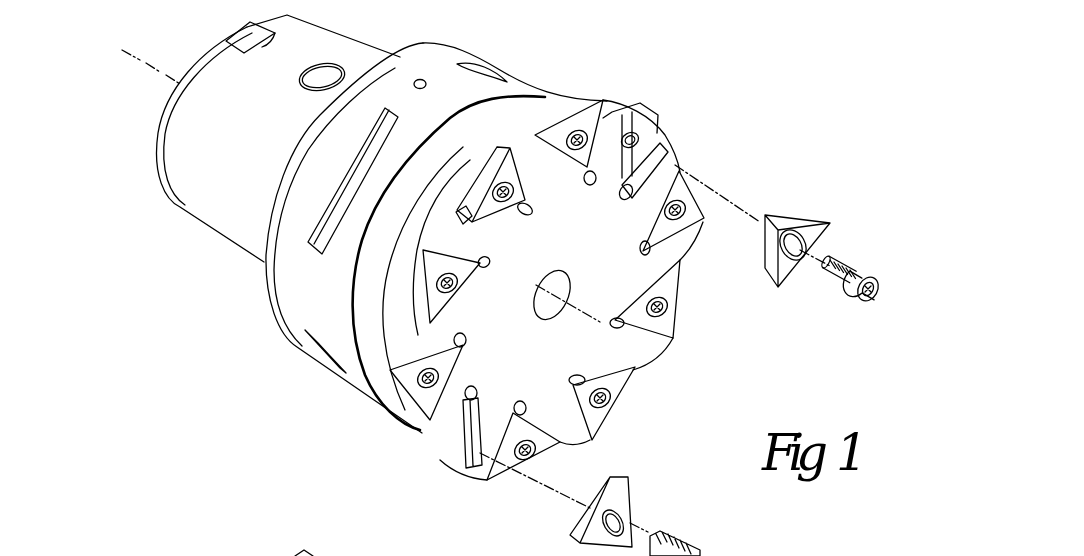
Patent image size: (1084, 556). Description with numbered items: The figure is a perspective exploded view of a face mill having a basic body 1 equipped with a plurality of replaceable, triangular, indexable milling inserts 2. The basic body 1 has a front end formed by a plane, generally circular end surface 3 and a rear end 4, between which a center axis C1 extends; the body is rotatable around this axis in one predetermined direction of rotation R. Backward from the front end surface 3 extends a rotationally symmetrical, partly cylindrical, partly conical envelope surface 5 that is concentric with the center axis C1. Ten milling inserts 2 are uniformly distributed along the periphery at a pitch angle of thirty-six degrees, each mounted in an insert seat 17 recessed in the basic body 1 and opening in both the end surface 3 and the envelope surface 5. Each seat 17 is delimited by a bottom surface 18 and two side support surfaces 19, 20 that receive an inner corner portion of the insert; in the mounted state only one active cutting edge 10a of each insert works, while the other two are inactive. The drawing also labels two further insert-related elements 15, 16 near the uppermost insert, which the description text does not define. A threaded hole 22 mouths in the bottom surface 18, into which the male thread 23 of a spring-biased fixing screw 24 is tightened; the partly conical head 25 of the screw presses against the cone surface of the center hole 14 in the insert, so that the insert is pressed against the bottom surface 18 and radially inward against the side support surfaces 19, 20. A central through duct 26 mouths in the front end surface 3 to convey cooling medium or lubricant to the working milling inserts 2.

The basic body 1 is at (408, 285).
The milling insert 2 is at (610, 302).
The front end surface 3 is at (553, 295).
The rear end 4 is at (152, 146).
The envelope surface 5 is at (394, 453).
The active cutting edge 10a is at (576, 130).
The center hole 14 is at (802, 262).
The insert seat side wall 15 is at (525, 99).
The cutting edge 16 is at (612, 63).
The insert seat 17 is at (444, 455).
The bottom surface 18 is at (648, 145).
The side support surface 19 is at (472, 442).
The side support surface 20 is at (642, 160).
The threaded hole 22 is at (630, 130).
The male thread 23 is at (830, 277).
The fixing screw 24 is at (861, 269).
The head 25 is at (852, 298).
The through duct 26 is at (562, 273).
The center axis C1 is at (584, 339).
The direction of rotation R is at (404, 202).